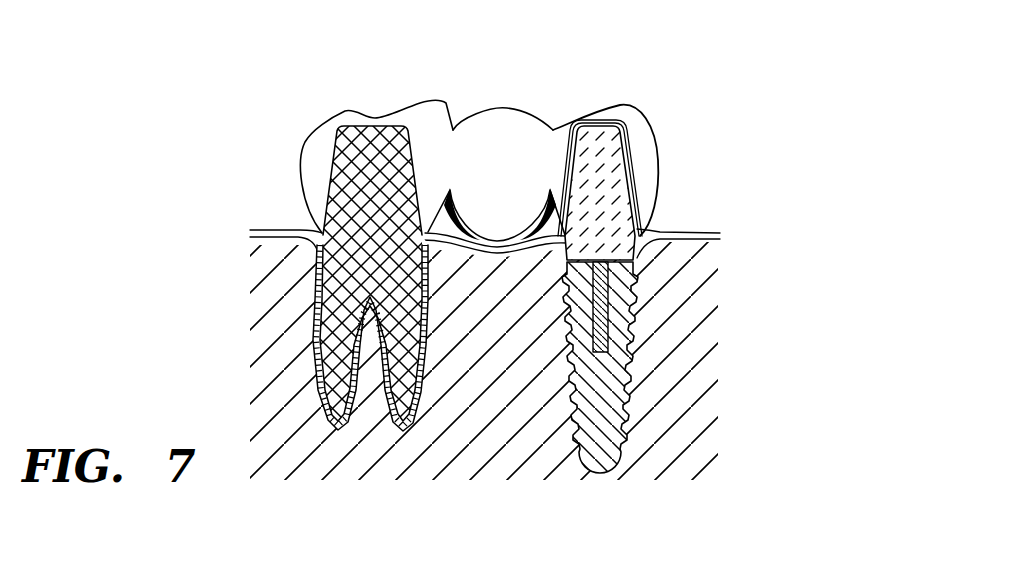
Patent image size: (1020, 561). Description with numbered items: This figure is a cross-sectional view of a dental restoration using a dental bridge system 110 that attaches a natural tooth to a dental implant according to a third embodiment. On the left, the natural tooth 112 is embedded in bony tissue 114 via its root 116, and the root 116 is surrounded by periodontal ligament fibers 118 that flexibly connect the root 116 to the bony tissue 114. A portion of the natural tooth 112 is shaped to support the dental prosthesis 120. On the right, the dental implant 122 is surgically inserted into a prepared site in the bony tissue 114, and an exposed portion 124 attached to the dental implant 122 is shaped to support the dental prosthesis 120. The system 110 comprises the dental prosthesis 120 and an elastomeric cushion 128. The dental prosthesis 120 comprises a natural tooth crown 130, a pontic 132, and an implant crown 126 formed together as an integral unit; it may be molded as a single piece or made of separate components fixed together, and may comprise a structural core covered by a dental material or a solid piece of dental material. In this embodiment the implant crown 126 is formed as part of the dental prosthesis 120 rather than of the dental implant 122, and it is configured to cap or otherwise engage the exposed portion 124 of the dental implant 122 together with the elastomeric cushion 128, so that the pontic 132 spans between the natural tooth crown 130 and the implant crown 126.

The dental bridge system 110 is at (645, 245).
The natural tooth 112 is at (360, 165).
The bony tissue 114 is at (280, 275).
The root 116 is at (327, 308).
The periodontal ligament fibers 118 is at (313, 337).
The dental prosthesis 120 is at (500, 149).
The dental implant 122 is at (645, 174).
The exposed portion 124 is at (620, 212).
The implant crown 126 is at (647, 150).
The elastomeric cushion 128 is at (637, 168).
The natural tooth crown 130 is at (322, 143).
The pontic 132 is at (523, 130).